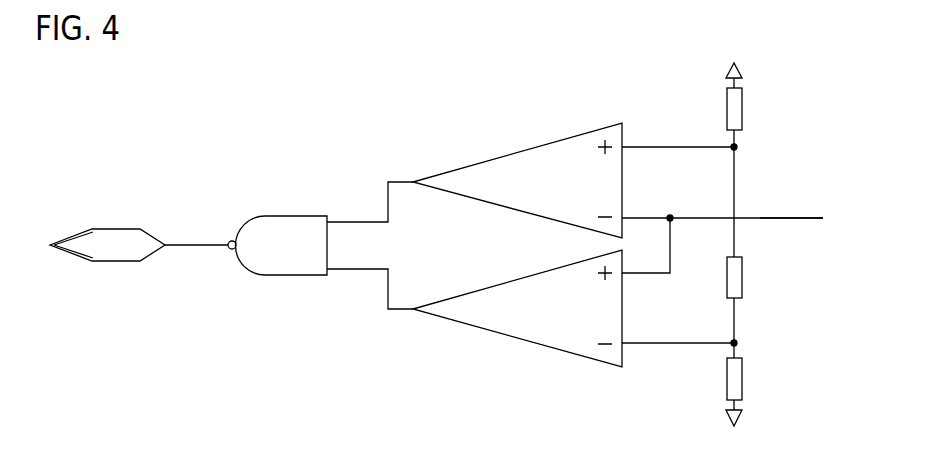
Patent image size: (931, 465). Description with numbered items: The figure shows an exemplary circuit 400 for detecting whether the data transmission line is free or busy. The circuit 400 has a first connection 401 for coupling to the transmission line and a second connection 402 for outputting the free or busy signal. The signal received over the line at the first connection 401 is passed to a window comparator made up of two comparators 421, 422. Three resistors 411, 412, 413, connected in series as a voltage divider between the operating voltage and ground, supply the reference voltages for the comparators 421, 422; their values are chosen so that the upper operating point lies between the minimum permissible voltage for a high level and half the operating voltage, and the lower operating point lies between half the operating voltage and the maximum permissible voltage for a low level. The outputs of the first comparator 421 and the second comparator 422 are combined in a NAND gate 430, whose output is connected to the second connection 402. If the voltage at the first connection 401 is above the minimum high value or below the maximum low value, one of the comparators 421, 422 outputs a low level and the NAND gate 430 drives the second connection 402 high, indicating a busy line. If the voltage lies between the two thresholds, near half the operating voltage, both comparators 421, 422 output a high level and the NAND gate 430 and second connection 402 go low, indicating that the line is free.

The circuit 400 is at (638, 65).
The first connection 401 is at (810, 212).
The second connection 402 is at (113, 266).
The resistor 411 is at (744, 109).
The resistor 412 is at (744, 278).
The resistor 413 is at (744, 381).
The first comparator 421 is at (624, 170).
The second comparator 422 is at (624, 326).
The NAND gate 430 is at (286, 214).